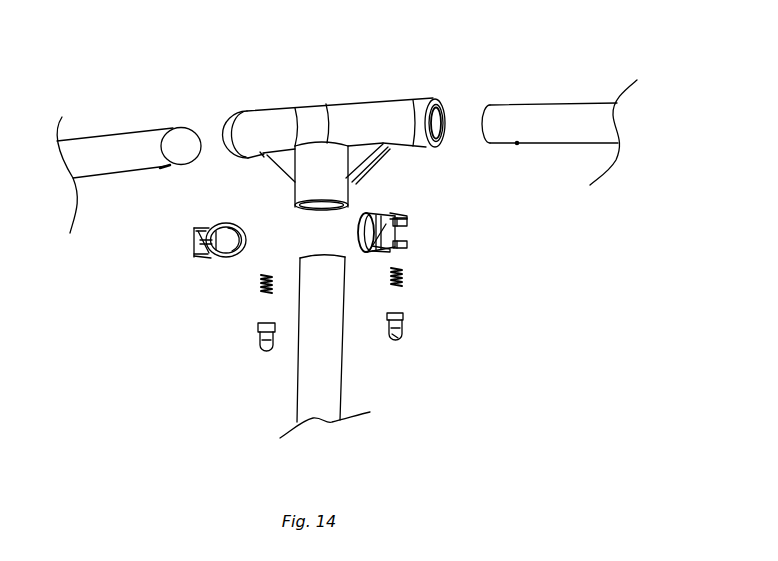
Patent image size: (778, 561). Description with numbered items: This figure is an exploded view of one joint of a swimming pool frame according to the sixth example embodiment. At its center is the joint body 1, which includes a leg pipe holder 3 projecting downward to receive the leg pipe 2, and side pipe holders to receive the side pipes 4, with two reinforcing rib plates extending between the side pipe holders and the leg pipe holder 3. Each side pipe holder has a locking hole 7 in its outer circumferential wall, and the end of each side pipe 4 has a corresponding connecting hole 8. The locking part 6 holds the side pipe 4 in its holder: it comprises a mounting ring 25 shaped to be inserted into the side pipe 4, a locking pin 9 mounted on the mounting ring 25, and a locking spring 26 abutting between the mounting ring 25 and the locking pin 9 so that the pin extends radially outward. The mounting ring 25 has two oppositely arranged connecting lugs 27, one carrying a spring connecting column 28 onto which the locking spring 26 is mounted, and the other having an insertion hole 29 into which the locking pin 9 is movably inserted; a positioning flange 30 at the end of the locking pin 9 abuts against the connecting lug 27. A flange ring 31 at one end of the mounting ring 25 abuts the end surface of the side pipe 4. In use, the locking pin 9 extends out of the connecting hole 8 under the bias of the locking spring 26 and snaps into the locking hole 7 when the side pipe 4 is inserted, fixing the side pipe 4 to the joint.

The joint body 1 is at (313, 100).
The leg pipe 2 is at (312, 365).
The leg pipe holder 3 is at (313, 183).
The side pipe 4 is at (112, 142).
The locking part 6 is at (380, 211).
The locking hole 7 is at (398, 144).
The connecting hole 8 is at (517, 143).
The locking pin 9 is at (397, 327).
The mounting ring 25 is at (380, 247).
The locking spring 26 is at (402, 283).
The connecting lug 27 is at (390, 213).
The spring connecting column 28 is at (395, 225).
The insertion hole 29 is at (397, 243).
The positioning flange 30 is at (388, 312).
The flange ring 31 is at (358, 228).